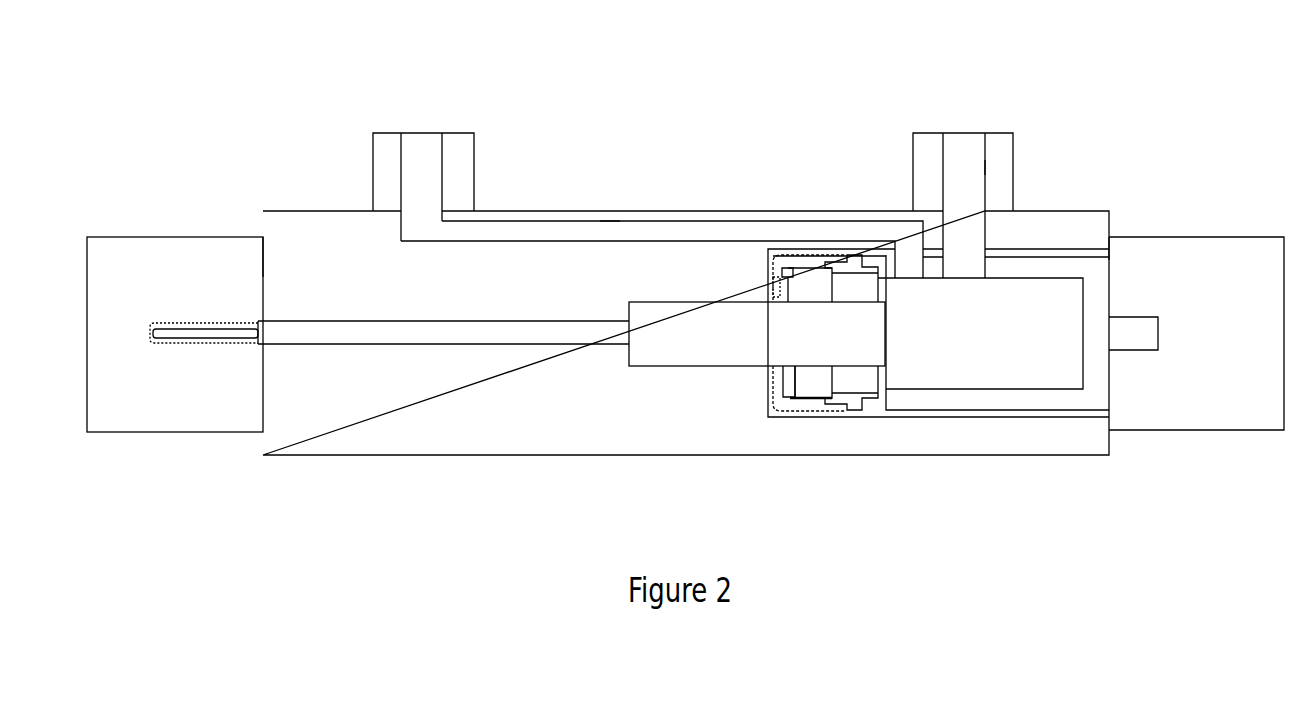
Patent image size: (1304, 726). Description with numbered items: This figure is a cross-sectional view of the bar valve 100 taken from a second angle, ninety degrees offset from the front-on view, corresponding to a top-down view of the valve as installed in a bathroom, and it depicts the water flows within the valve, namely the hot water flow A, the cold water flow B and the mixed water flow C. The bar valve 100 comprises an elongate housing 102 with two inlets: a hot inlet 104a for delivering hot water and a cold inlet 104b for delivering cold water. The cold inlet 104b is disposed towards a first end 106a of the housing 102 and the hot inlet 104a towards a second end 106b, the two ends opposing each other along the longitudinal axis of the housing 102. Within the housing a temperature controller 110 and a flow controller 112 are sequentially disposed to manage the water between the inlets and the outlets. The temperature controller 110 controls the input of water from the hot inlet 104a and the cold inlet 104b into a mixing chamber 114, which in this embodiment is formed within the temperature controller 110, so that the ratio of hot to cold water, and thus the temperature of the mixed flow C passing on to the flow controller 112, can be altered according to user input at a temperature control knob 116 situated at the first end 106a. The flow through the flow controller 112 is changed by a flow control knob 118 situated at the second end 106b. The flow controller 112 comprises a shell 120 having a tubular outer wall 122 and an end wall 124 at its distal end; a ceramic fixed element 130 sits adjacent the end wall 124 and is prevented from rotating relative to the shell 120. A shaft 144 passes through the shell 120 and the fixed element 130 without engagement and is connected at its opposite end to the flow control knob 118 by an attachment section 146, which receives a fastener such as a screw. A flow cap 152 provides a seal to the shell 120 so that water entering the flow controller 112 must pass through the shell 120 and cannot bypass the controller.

The bar valve 100 is at (300, 152).
The elongate housing 102 is at (547, 211).
The hot inlet 104a is at (385, 130).
The cold inlet 104b is at (963, 132).
The first end of housing 106a is at (1110, 252).
The second end of housing 106b is at (262, 277).
The temperature controller 110 is at (1012, 405).
The flow controller 112 is at (835, 244).
The mixing chamber 114 is at (1045, 278).
The temperature control knob 116 is at (1175, 430).
The flow control knob 118 is at (142, 432).
The shell 120 is at (787, 413).
The tubular outer wall 122 is at (807, 410).
The end wall 124 is at (770, 377).
The fixed element 130 is at (778, 262).
The shaft 144 is at (375, 347).
The attachment section 146 is at (194, 343).
The flow cap 152 is at (867, 403).
The hot water flow A is at (607, 222).
The cold water flow B is at (985, 168).
The mixed water flow C is at (697, 302).